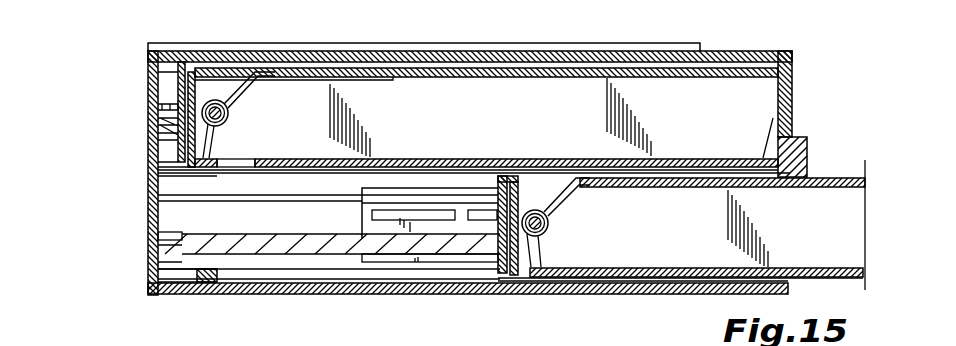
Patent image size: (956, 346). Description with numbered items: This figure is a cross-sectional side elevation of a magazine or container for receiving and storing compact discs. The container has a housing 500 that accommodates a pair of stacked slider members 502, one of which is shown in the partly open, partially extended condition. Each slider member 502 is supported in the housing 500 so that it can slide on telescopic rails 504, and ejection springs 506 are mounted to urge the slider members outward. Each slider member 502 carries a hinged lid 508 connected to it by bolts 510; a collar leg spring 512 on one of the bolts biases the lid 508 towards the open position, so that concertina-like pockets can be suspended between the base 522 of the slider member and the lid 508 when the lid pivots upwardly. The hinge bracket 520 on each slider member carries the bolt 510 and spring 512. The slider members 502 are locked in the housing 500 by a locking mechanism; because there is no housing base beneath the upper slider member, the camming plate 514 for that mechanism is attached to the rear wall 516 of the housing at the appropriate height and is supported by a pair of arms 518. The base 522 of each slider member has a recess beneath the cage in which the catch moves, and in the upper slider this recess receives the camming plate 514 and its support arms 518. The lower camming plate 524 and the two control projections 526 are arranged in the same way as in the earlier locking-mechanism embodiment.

The housing 500 is at (160, 223).
The slider member 502 is at (793, 92).
The telescopic rails 504 is at (432, 188).
The ejection spring 506 is at (162, 131).
The hinged lid 508 is at (697, 77).
The bolt 510 is at (231, 119).
The collar leg spring 512 is at (230, 106).
The camming plate 514 is at (217, 170).
The rear wall 516 is at (157, 167).
The support arm 518 is at (158, 175).
The hinge bracket 520 is at (207, 66).
The base 522 is at (615, 278).
The lower camming plate 524 is at (207, 295).
The control projection 526 is at (173, 113).